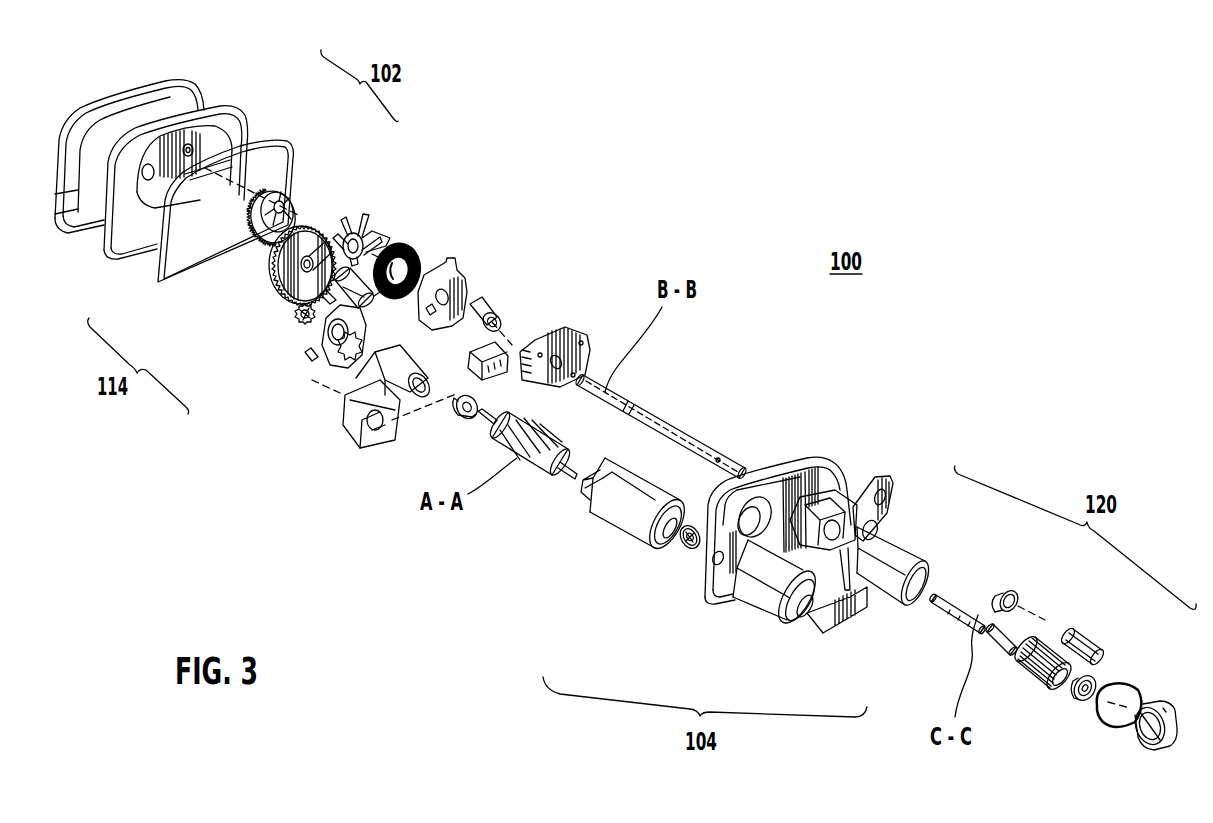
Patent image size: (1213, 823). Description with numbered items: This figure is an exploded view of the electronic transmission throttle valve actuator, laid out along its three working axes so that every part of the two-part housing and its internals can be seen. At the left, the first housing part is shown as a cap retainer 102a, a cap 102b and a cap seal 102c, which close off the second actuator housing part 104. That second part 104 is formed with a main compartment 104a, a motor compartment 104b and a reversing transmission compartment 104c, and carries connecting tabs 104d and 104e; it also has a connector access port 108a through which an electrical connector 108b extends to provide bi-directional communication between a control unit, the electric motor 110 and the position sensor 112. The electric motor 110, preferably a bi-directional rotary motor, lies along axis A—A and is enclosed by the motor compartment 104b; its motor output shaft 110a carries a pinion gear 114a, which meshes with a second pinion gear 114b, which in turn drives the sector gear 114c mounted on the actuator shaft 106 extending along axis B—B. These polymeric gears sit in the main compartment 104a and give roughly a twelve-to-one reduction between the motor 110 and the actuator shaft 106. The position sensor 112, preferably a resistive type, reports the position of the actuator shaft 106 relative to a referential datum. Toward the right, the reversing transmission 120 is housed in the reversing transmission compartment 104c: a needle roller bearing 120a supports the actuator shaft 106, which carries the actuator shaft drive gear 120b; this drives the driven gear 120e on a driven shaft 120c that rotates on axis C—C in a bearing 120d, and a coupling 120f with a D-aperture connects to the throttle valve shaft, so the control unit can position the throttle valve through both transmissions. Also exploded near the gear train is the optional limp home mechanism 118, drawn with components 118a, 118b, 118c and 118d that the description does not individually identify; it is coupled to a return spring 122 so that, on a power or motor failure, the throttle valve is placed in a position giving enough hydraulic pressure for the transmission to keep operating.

The cap retainer 102a is at (198, 80).
The cap 102b is at (228, 112).
The cap seal 102c is at (279, 141).
The second actuator housing part 104 is at (779, 538).
The main compartment 104a is at (702, 562).
The motor compartment 104b is at (760, 590).
The reversing transmission compartment 104c is at (874, 600).
The connecting tab 104d is at (694, 548).
The connecting tab 104e is at (838, 540).
The actuator shaft 106 is at (660, 414).
The connector access port 108a is at (777, 505).
The electrical connector 108b is at (337, 400).
The electric motor 110 is at (603, 525).
The motor output shaft 110a is at (487, 418).
The position sensor 112 is at (508, 340).
The pinion gear 114a is at (300, 320).
The pinion gear 114b is at (288, 283).
The sector gear 114c is at (245, 245).
The limp home mechanism 118 is at (394, 218).
The clutch lever 118a is at (352, 232).
The clutch arm 118b is at (362, 218).
The clutch sleeve 118c is at (383, 232).
The clutch ring 118d is at (400, 244).
The reversing transmission 120 is at (1057, 620).
The needle roller bearing 120a is at (1005, 590).
The actuator shaft drive gear 120b is at (1088, 634).
The driven shaft 120c is at (978, 597).
The bearing 120d is at (1007, 632).
The driven gear 120e is at (1053, 642).
The coupling 120f is at (1113, 675).
The return spring 122 is at (418, 264).